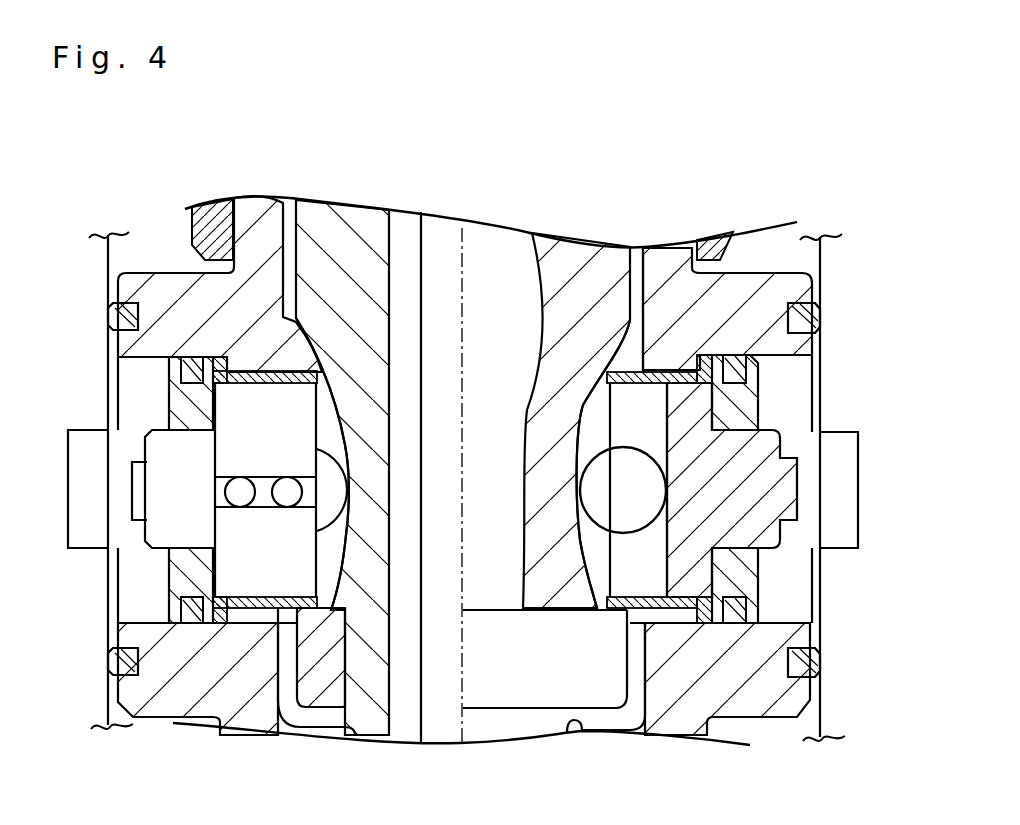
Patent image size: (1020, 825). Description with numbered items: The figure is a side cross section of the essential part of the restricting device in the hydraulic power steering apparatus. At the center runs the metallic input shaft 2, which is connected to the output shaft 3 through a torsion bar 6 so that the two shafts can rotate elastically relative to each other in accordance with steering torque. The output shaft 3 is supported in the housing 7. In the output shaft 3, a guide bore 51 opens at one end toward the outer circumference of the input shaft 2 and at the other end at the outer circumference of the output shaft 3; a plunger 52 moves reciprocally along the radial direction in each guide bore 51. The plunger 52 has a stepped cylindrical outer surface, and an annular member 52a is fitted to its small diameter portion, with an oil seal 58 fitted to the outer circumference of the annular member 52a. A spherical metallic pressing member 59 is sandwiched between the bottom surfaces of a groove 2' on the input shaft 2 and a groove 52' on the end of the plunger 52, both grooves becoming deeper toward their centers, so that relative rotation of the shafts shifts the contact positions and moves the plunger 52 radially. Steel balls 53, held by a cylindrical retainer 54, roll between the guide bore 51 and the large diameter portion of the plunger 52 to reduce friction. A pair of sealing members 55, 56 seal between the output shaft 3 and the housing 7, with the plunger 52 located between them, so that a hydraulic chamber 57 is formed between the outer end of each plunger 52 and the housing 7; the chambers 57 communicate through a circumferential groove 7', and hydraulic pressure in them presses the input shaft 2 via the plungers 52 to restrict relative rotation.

The input shaft 2 is at (469, 439).
The groove 2' is at (463, 464).
The output shaft 3 is at (265, 199).
The torsion bar 6 is at (443, 222).
The housing 7 is at (463, 486).
The circumferential groove 7' is at (465, 489).
The guide bore 51 is at (260, 600).
The plunger 52 is at (457, 585).
The annular member 52a is at (180, 577).
The groove 52' is at (441, 490).
The steel balls 53 is at (287, 490).
The retainer 54 is at (258, 372).
The sealing member 55 is at (108, 320).
The sealing member 56 is at (113, 667).
The hydraulic chamber 57 is at (132, 407).
The oil seal 58 is at (180, 375).
The pressing member 59 is at (350, 522).